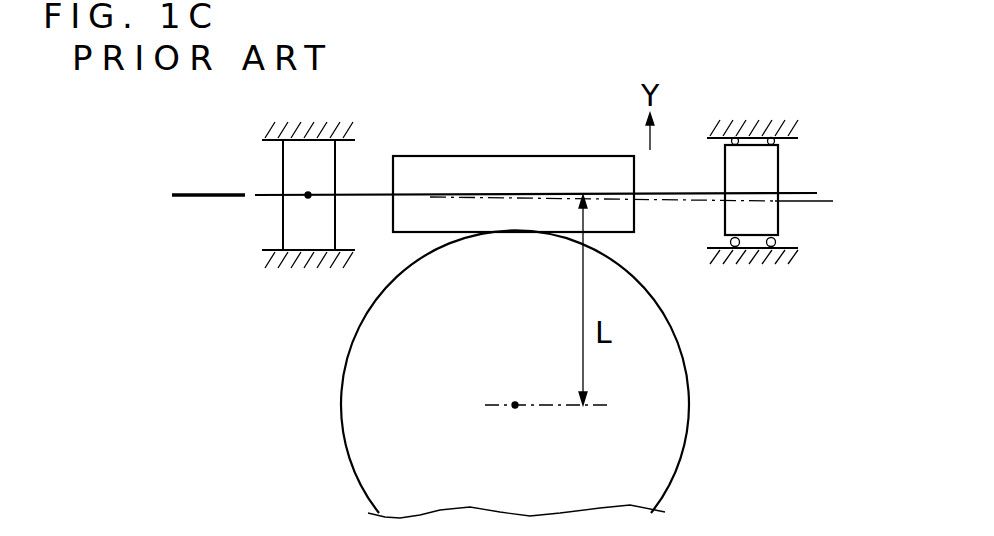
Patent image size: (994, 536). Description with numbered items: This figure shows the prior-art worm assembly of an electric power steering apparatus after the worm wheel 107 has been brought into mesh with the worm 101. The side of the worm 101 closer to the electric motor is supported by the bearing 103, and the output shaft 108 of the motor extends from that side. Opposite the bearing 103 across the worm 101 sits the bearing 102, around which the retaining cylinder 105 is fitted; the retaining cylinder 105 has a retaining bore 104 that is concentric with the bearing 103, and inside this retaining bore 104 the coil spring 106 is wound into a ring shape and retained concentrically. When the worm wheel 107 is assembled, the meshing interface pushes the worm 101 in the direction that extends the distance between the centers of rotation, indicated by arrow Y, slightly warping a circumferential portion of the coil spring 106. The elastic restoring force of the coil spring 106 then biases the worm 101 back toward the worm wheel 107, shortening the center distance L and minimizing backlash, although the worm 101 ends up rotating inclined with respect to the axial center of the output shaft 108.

The worm 101 is at (500, 160).
The bearing 102 is at (773, 168).
The bearing 103 is at (335, 163).
The retaining bore 104 is at (710, 245).
The retaining cylinder 105 is at (738, 270).
The coil spring 106 is at (748, 248).
The worm wheel 107 is at (347, 390).
The output shaft 108 is at (207, 197).